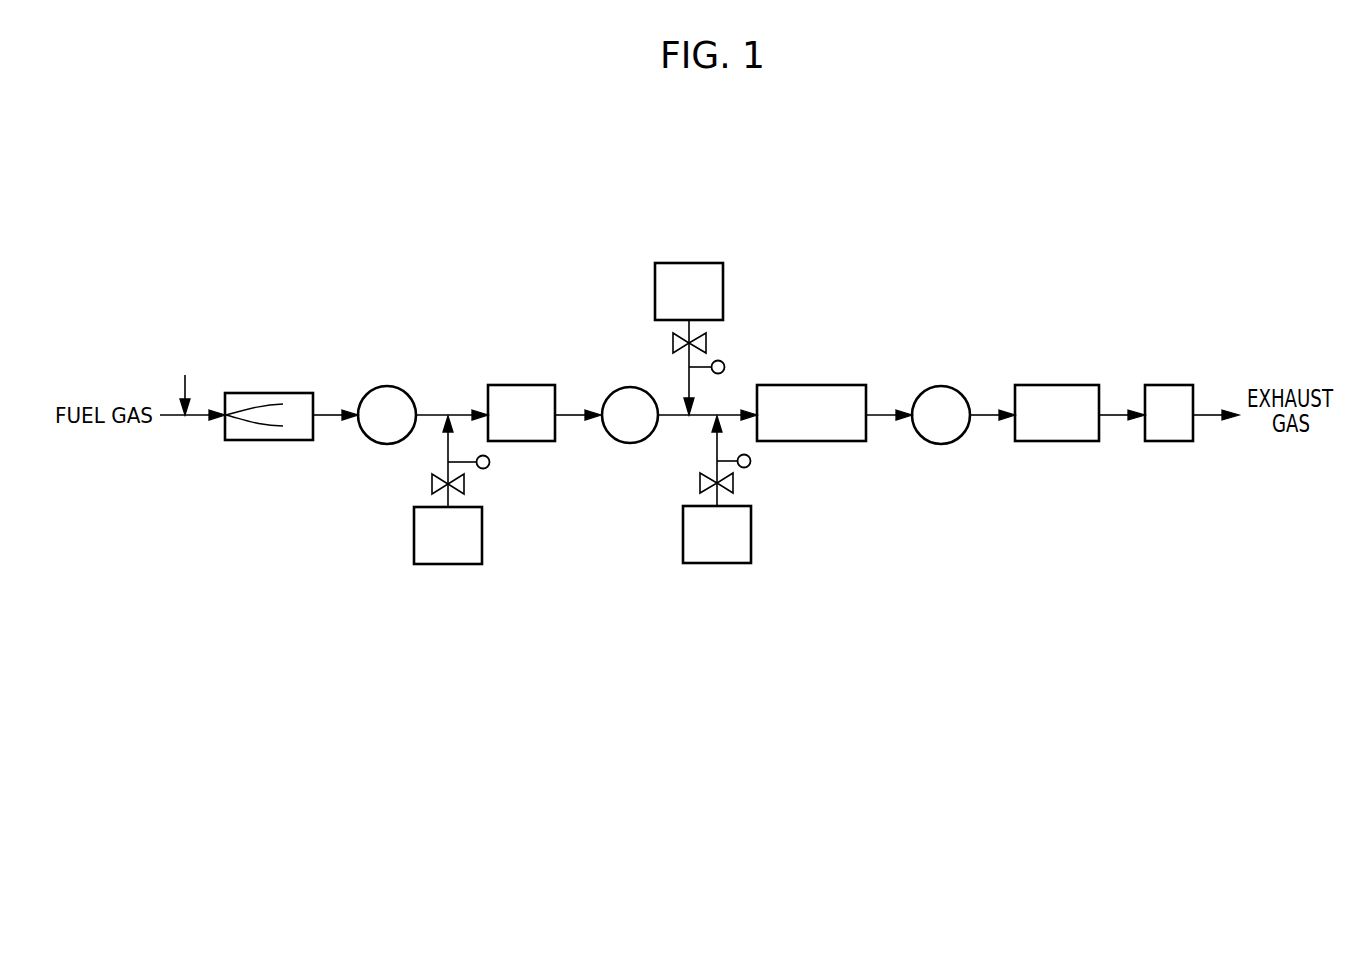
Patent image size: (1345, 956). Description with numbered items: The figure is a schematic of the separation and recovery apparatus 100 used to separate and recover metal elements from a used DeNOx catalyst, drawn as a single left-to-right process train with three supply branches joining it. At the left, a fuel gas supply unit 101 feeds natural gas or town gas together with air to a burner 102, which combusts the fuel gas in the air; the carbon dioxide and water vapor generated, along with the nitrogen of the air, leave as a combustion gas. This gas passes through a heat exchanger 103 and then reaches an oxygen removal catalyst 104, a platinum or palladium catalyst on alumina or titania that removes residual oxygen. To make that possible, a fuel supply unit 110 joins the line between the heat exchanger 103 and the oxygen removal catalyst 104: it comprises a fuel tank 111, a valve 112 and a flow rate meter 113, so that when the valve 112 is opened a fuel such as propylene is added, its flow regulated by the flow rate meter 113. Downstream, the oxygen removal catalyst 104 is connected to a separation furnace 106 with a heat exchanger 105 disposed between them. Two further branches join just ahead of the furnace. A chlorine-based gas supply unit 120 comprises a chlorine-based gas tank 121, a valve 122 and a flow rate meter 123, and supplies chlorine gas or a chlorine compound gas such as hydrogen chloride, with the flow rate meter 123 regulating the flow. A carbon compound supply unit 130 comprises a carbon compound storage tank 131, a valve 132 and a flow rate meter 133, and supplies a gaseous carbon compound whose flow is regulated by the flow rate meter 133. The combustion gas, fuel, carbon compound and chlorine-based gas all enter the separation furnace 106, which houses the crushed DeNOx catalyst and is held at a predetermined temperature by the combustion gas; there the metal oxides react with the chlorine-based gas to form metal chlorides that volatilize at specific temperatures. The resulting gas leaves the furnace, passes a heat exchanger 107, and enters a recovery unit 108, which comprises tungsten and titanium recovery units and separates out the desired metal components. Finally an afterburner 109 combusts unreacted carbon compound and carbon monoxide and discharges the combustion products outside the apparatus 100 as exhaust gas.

The separation and recovery apparatus 100 is at (860, 196).
The fuel gas supply unit 101 is at (185, 446).
The burner 102 is at (269, 392).
The heat exchanger 103 is at (388, 385).
The oxygen removal catalyst 104 is at (524, 385).
The heat exchanger 105 is at (621, 387).
The separation furnace 106 is at (837, 385).
The heat exchanger 107 is at (941, 386).
The recovery unit 108 is at (1057, 385).
The afterburner 109 is at (1170, 385).
The fuel supply unit 110 is at (441, 501).
The fuel tank 111 is at (482, 537).
The valve 112 is at (465, 484).
The flow rate meter 113 is at (490, 462).
The chlorine-based gas supply unit 120 is at (726, 299).
The chlorine-based gas tank 121 is at (723, 280).
The valve 122 is at (707, 341).
The flow rate meter 123 is at (725, 366).
The carbon compound supply unit 130 is at (756, 537).
The carbon compound storage tank 131 is at (751, 540).
The valve 132 is at (735, 484).
The flow rate meter 133 is at (751, 461).